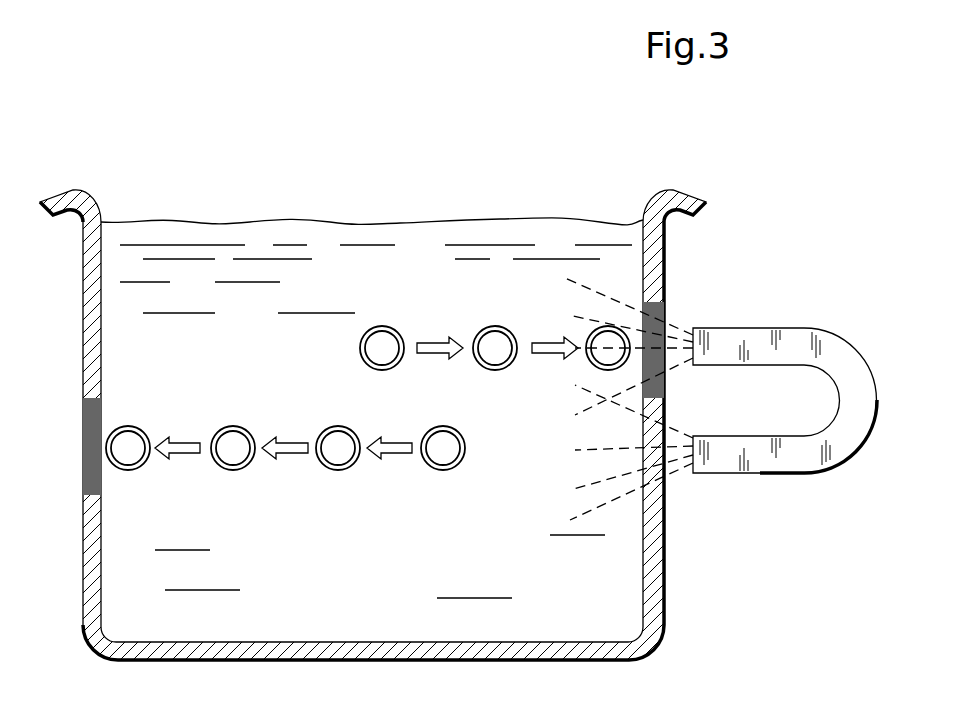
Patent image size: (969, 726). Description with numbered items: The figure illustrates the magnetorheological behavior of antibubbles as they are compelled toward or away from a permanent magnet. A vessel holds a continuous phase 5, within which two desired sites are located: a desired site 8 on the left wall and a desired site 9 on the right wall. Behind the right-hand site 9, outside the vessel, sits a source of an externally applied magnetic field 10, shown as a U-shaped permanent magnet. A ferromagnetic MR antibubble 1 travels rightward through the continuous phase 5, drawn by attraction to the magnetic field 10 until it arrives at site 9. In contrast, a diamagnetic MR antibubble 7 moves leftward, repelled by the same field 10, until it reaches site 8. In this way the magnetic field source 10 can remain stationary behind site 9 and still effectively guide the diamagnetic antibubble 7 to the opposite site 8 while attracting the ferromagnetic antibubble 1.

The ferromagnetic MR antibubble 1 is at (608, 323).
The continuous phase 5 is at (328, 297).
The diamagnetic MR antibubble 7 is at (133, 470).
The desired site 8 is at (83, 447).
The desired site 9 is at (666, 312).
The source of an externally applied magnetic field 10 is at (732, 475).